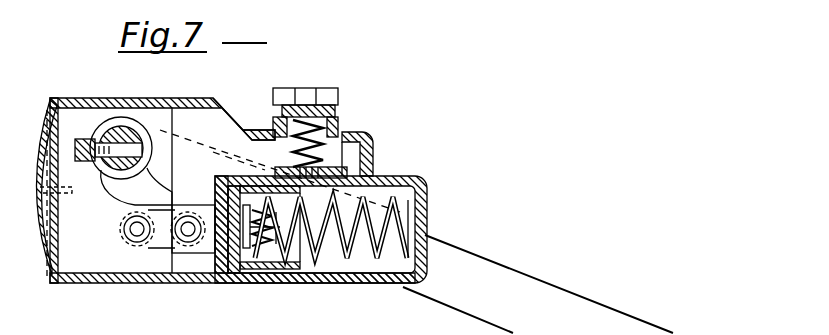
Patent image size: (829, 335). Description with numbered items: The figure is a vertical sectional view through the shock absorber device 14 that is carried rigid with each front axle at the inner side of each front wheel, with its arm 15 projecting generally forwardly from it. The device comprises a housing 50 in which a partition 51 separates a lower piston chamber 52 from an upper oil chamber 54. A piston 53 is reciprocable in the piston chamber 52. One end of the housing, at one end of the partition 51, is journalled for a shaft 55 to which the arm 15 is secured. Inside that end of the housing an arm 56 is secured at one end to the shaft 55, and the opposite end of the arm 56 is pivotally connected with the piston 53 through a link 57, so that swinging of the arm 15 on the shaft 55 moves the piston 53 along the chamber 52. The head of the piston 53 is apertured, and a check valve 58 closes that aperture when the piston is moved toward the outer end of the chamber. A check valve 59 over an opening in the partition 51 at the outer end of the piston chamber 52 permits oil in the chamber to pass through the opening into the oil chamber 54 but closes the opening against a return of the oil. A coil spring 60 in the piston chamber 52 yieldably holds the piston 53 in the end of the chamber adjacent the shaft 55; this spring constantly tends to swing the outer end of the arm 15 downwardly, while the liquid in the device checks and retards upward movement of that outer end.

The shock absorber device 14 is at (249, 94).
The arm 15 is at (528, 283).
The housing 50 is at (150, 99).
The partition 51 is at (205, 175).
The piston chamber 52 is at (386, 190).
The piston 53 is at (282, 270).
The oil chamber 54 is at (343, 148).
The shaft 55 is at (116, 193).
The arm 56 is at (124, 204).
The link 57 is at (163, 254).
The check valve 58 is at (213, 284).
The check valve 59 is at (337, 128).
The coil spring 60 is at (408, 225).